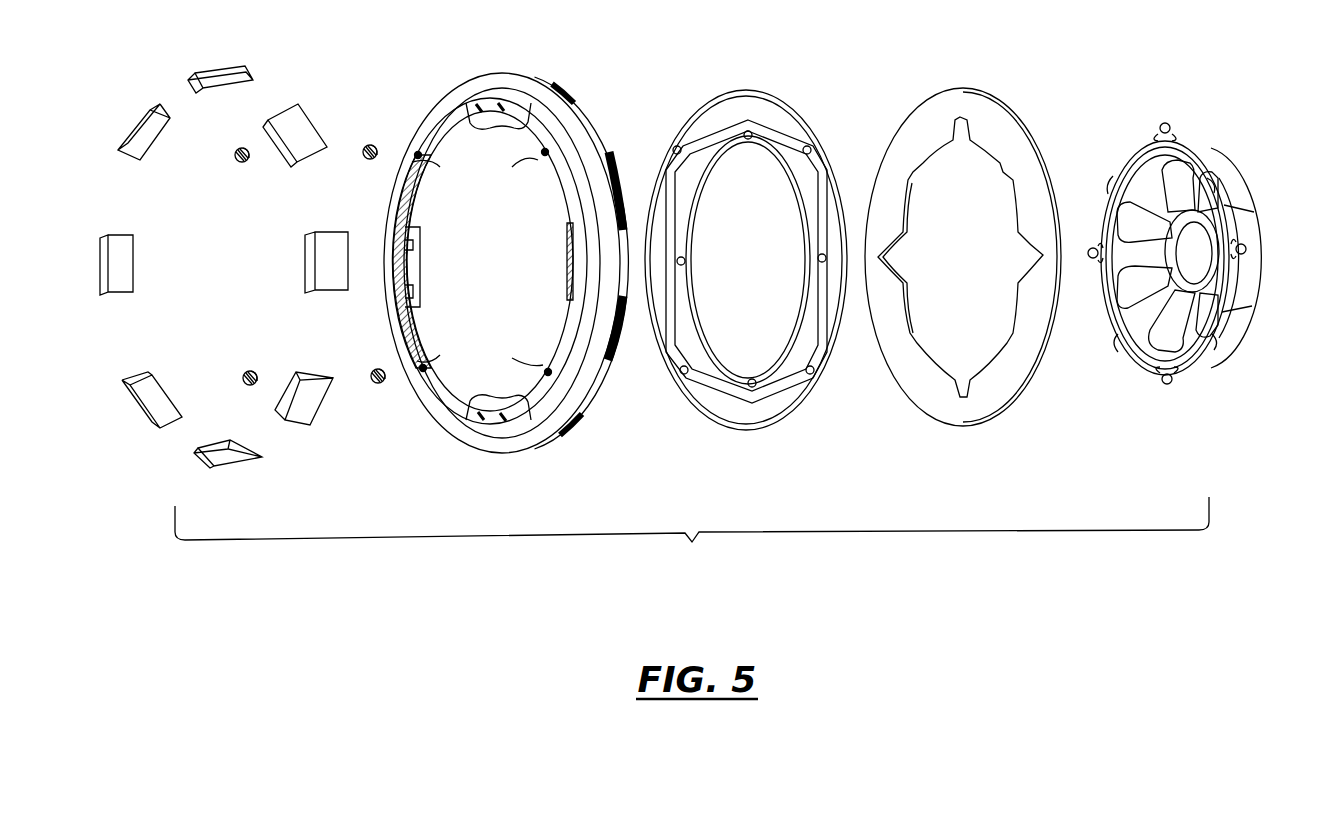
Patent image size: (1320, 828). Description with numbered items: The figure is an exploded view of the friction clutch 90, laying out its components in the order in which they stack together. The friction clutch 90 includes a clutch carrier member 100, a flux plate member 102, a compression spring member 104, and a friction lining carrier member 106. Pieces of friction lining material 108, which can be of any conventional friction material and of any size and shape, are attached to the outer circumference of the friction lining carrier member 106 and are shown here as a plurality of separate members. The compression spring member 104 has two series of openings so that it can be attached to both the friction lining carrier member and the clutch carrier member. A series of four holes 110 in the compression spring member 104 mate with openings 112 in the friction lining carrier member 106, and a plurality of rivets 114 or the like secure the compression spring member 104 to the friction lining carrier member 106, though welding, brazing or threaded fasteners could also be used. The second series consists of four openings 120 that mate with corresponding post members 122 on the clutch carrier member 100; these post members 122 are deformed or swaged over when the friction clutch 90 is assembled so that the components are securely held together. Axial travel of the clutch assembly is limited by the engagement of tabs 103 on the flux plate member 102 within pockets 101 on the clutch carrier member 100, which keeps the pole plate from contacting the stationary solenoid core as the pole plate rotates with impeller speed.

The friction clutch 90 is at (692, 534).
The clutch carrier member 100 is at (1220, 357).
The pockets 101 is at (1122, 182).
The flux plate member 102 is at (1012, 392).
The tabs 103 is at (1004, 183).
The compression spring member 104 is at (788, 420).
The friction lining carrier member 106 is at (574, 428).
The friction lining material 108 is at (297, 122).
The holes 110 is at (676, 146).
The openings 112 is at (421, 160).
The rivets 114 is at (238, 160).
The openings 120 is at (749, 139).
The post members 122 is at (1170, 128).